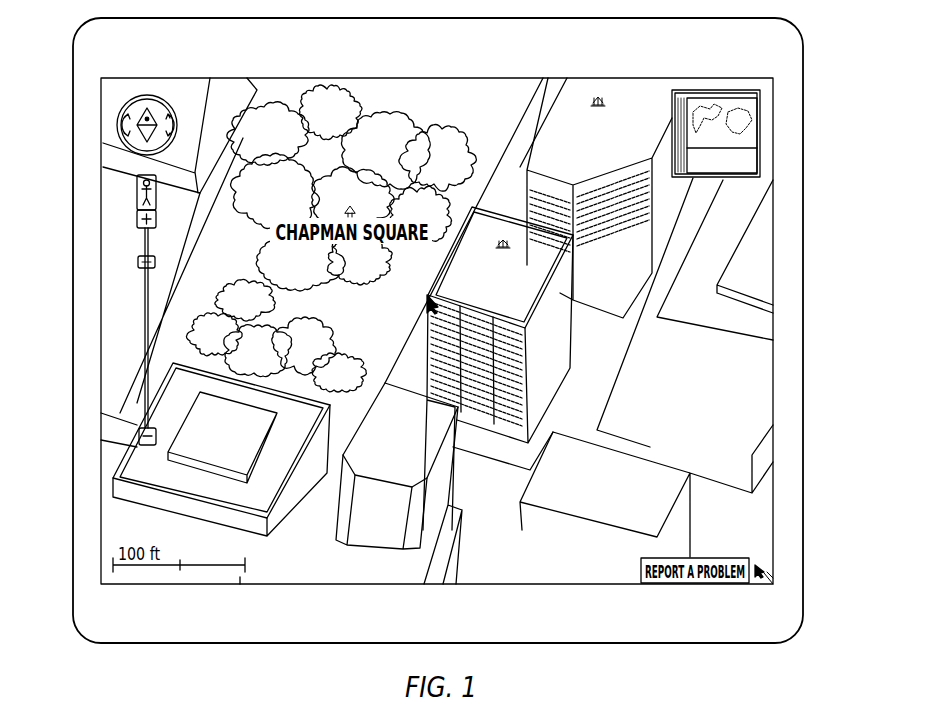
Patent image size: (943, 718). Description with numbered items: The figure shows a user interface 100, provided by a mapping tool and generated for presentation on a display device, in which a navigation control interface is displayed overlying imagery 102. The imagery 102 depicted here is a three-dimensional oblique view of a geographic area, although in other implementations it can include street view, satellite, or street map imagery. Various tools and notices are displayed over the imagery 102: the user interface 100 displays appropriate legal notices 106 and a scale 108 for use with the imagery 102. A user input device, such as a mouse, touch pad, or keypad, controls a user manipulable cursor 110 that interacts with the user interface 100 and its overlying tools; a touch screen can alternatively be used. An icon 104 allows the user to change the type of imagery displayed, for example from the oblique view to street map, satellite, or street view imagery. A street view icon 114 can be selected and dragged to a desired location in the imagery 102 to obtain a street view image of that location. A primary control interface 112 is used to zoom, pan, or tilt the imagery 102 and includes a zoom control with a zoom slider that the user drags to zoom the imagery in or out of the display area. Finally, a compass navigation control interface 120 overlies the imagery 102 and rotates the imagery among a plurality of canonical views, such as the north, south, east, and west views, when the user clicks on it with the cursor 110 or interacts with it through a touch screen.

The user interface 100 is at (178, 55).
The imagery 102 is at (597, 90).
The icon 104 is at (760, 137).
The legal notices 106 is at (463, 585).
The scale 108 is at (295, 578).
The user manipulable cursor 110 is at (425, 311).
The primary control interface 112 is at (137, 261).
The street view icon 114 is at (137, 195).
The compass navigation control interface 120 is at (117, 131).